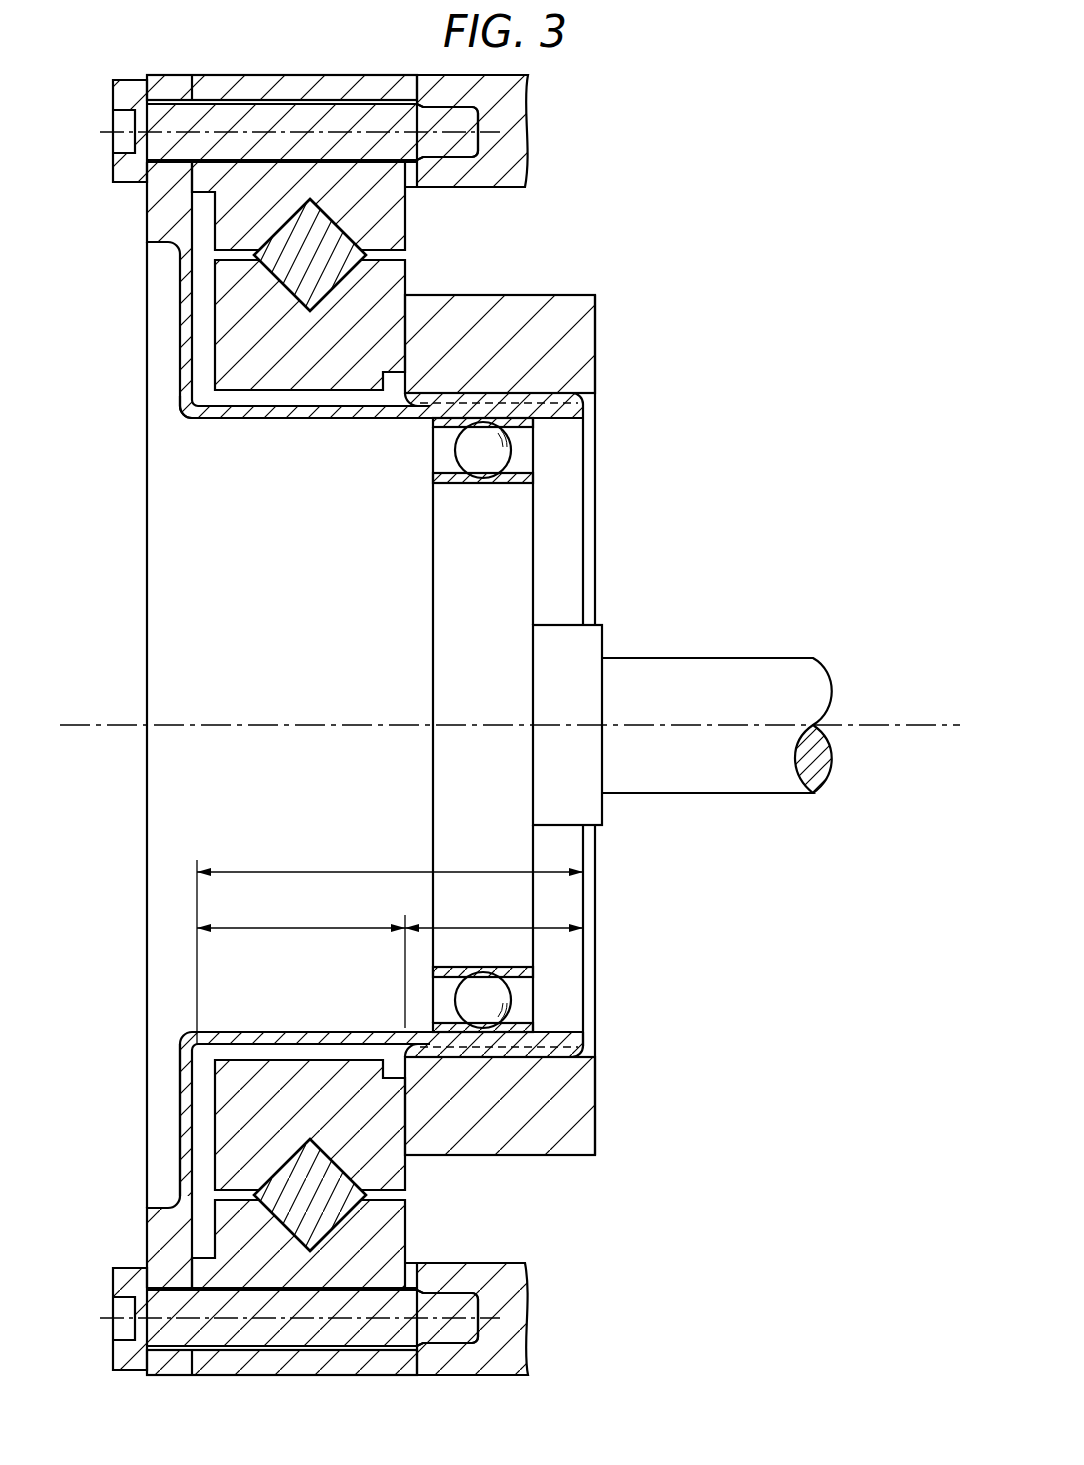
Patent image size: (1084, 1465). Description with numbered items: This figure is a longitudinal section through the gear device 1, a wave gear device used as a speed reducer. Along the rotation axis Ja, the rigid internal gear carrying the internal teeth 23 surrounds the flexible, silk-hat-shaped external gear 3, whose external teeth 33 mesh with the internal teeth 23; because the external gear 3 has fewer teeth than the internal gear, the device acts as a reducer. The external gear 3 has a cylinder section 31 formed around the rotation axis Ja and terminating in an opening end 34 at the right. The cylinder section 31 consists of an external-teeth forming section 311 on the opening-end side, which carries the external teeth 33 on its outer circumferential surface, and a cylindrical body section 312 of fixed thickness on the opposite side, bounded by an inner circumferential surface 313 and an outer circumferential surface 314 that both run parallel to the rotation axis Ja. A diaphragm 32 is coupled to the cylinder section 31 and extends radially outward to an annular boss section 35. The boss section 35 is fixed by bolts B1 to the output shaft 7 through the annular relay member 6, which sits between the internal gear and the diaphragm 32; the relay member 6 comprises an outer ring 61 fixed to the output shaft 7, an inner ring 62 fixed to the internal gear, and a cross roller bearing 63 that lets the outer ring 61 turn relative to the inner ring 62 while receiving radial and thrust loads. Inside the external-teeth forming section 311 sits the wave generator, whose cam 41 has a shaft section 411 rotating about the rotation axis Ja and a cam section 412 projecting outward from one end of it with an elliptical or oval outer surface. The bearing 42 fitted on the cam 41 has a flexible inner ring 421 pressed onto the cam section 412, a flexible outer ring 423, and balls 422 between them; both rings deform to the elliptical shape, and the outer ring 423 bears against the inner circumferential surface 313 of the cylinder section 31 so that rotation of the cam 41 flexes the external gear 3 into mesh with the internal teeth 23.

The gear device 1 is at (502, 725).
The internal teeth 23 is at (503, 1052).
The external gear 3 is at (133, 526).
The cylinder section 31 is at (390, 858).
The external-teeth forming section 311 is at (494, 913).
The cylindrical body section 312 is at (301, 913).
The inner circumferential surface 313 is at (328, 420).
The outer circumferential surface 314 is at (240, 400).
The diaphragm 32 is at (166, 1136).
The external teeth 33 is at (448, 1058).
The opening end 34 is at (588, 940).
The boss section 35 is at (133, 226).
The cam 41 is at (658, 685).
The shaft section 411 is at (590, 633).
The cam section 412 is at (522, 567).
The bearing 42 is at (600, 450).
The inner ring 421 is at (535, 484).
The balls 422 is at (512, 452).
The outer ring 423 is at (537, 427).
The relay member 6 is at (442, 276).
The outer ring 61 is at (370, 212).
The inner ring 62 is at (370, 277).
The bearing 63 is at (338, 240).
The output shaft 7 is at (531, 100).
The bolts B1 is at (116, 171).
The rotation axis Ja is at (903, 722).